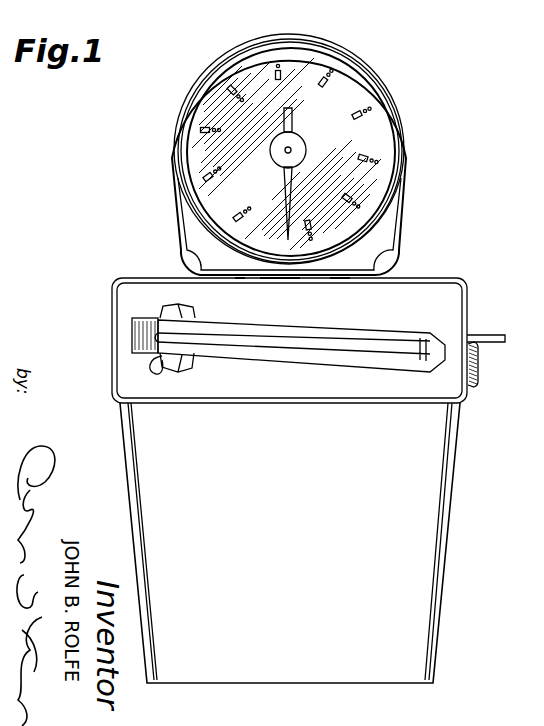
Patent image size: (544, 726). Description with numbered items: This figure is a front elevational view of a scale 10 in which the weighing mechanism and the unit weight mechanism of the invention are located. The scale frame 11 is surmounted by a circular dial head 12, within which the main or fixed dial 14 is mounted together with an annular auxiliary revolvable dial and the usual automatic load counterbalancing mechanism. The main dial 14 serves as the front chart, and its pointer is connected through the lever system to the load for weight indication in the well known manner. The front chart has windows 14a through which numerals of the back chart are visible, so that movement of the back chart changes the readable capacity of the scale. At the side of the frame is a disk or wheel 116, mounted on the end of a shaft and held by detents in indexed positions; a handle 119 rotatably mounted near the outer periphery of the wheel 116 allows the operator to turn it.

The scale 10 is at (461, 273).
The scale frame 11 is at (470, 307).
The circular dial head 12 is at (412, 158).
The main dial 14 is at (383, 127).
The windows 14a is at (333, 79).
The wheel 116 is at (479, 385).
The handle 119 is at (504, 343).